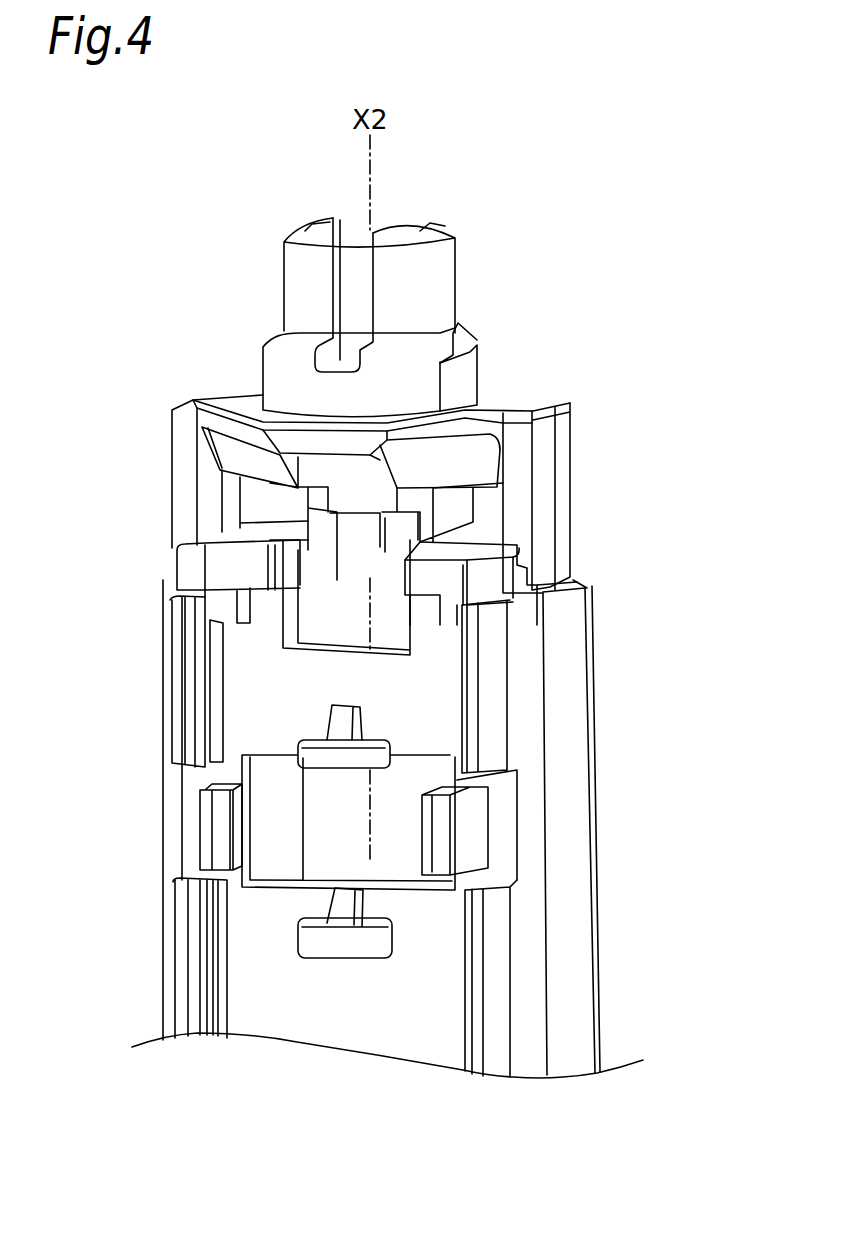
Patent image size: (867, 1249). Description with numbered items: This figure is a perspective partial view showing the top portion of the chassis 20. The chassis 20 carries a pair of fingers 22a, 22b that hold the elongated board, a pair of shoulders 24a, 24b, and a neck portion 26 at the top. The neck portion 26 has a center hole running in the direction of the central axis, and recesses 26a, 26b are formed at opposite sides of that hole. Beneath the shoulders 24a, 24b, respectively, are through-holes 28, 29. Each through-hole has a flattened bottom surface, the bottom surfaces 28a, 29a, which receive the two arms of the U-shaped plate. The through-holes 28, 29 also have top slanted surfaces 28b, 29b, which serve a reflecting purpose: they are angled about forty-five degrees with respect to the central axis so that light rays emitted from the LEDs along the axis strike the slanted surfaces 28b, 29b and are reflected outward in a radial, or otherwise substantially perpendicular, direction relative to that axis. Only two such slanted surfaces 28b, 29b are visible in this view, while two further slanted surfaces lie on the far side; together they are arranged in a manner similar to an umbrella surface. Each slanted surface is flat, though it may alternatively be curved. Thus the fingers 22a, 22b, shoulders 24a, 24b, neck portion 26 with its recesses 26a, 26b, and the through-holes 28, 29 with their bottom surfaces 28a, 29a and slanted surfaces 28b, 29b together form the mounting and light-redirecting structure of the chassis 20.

The chassis 20 is at (622, 784).
The finger 22a is at (213, 827).
The finger 22b is at (443, 835).
The shoulder 24a is at (200, 404).
The shoulder 24b is at (518, 407).
The neck portion 26 is at (398, 373).
The recess 26a is at (266, 372).
The recess 26b is at (470, 370).
The through-hole 28 is at (233, 499).
The bottom surface 28a is at (215, 550).
The top slanted surface 28b is at (233, 445).
The through-hole 29 is at (493, 520).
The bottom surface 29a is at (487, 553).
The top slanted surface 29b is at (473, 459).